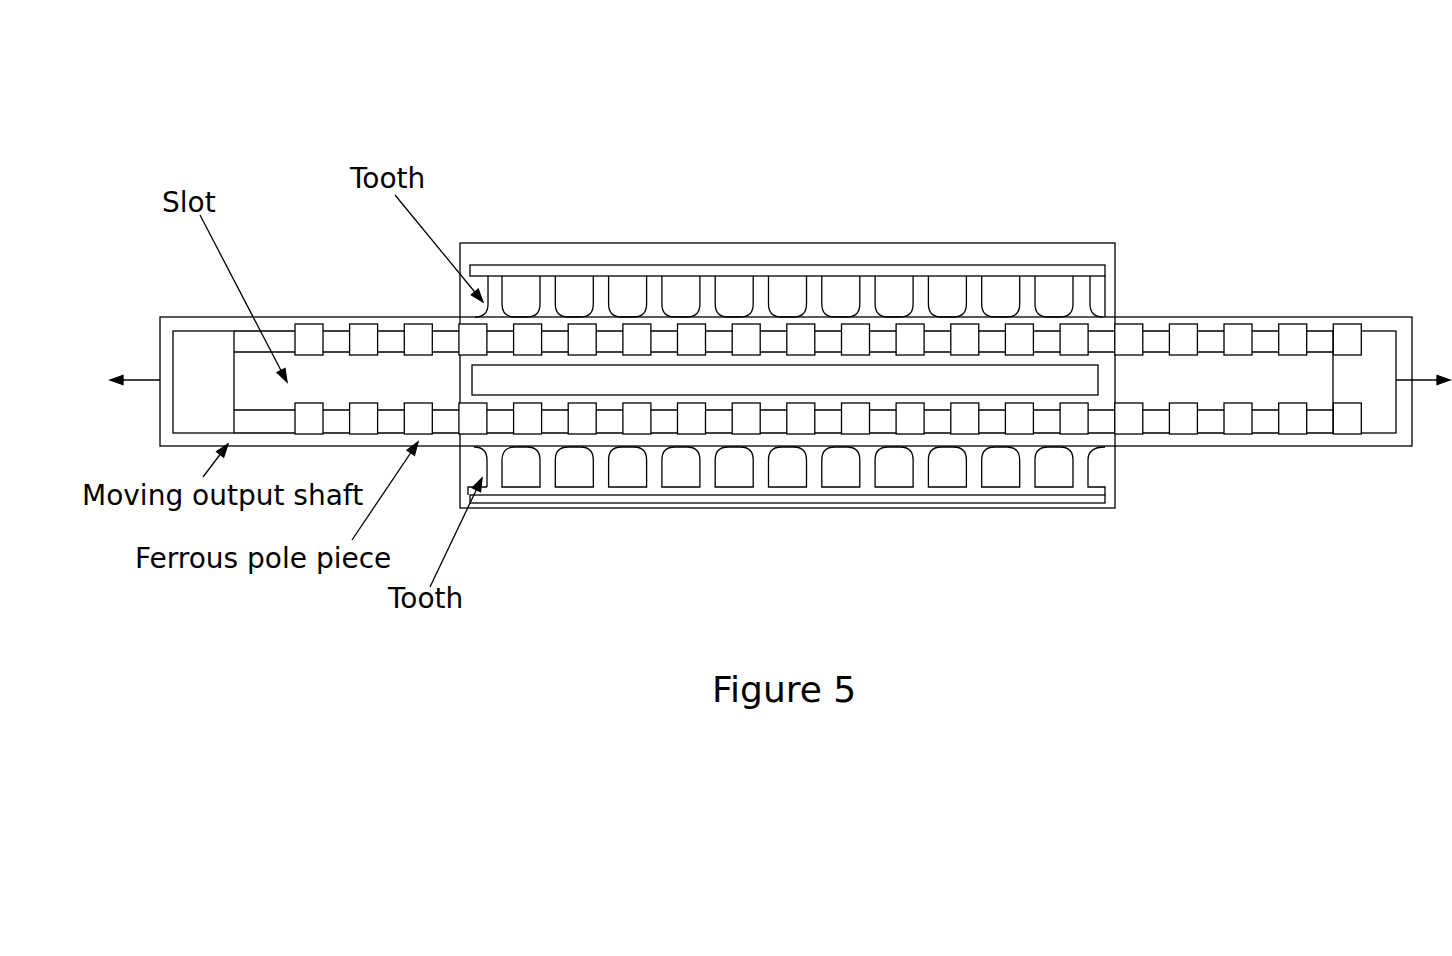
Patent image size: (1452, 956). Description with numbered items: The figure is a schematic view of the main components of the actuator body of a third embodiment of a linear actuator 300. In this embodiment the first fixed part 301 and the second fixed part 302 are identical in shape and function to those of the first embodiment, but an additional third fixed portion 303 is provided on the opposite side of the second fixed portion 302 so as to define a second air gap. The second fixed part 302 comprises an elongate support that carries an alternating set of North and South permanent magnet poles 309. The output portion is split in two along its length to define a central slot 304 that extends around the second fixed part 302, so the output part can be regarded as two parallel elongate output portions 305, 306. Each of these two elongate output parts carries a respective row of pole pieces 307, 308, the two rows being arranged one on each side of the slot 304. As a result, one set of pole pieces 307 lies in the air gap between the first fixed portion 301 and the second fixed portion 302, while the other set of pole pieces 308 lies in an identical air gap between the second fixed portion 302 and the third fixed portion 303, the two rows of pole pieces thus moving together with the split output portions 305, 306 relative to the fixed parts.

The linear actuator 300 is at (780, 323).
The first fixed part 301 is at (801, 506).
The second fixed part 302 is at (955, 245).
The third fixed portion 303 is at (628, 265).
The central slot 304 is at (1257, 383).
The first elongate output portion 305 is at (1262, 336).
The second elongate output portion 306 is at (1155, 433).
The pole pieces 307 is at (533, 330).
The pole pieces 308 is at (585, 435).
The permanent magnet poles 309 is at (1098, 383).